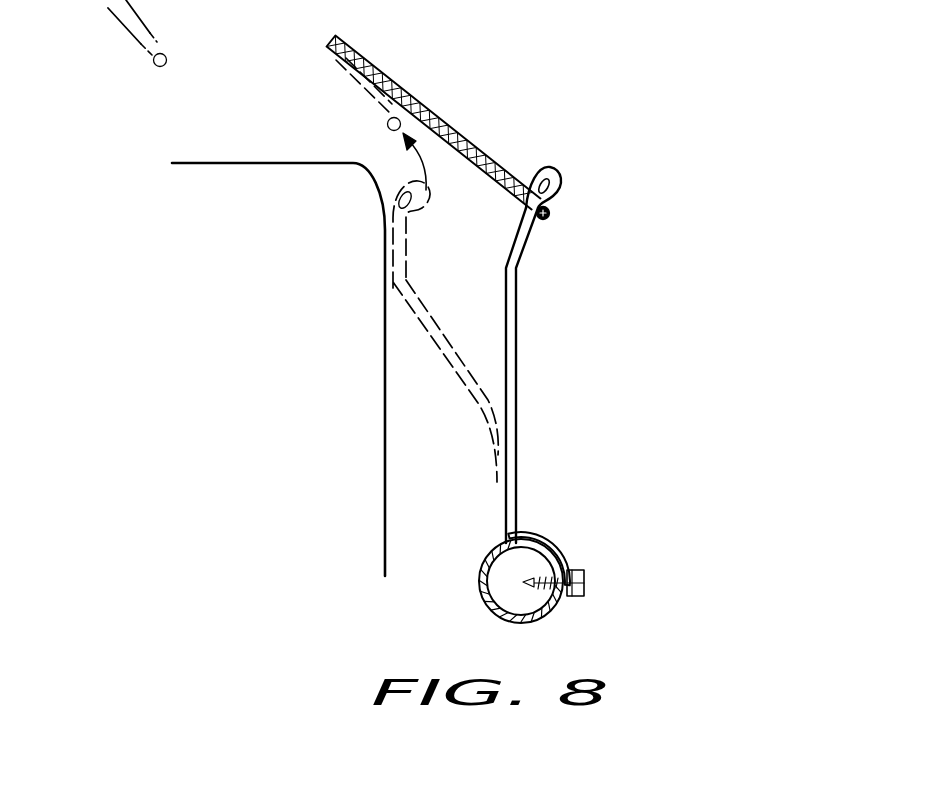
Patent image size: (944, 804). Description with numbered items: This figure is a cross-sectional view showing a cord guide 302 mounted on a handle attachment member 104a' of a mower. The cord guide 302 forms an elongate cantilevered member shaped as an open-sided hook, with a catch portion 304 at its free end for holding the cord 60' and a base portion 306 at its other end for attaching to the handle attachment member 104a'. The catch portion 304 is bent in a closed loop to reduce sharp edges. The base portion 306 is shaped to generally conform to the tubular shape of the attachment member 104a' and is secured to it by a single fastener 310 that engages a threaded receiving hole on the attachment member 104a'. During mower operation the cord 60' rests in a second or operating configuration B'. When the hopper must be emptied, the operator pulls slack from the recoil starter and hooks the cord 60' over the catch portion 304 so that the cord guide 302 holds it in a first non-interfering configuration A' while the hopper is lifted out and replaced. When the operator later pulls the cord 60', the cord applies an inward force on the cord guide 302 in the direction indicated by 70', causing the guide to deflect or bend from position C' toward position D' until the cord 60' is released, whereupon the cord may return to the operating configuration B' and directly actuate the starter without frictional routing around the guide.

The cord 60' is at (324, 105).
The second or operating configuration B' is at (133, 100).
The catch portion 304 is at (562, 183).
The first non-interfering configuration A' is at (585, 234).
The cord guide 302 is at (450, 368).
The direction of inward force 70' is at (462, 266).
The deflected position of the guide D' is at (347, 350).
The undeflected position of the guide C' is at (565, 457).
The base portion 306 is at (553, 545).
The fastener 310 is at (588, 584).
The handle attachment member 104a' is at (457, 582).